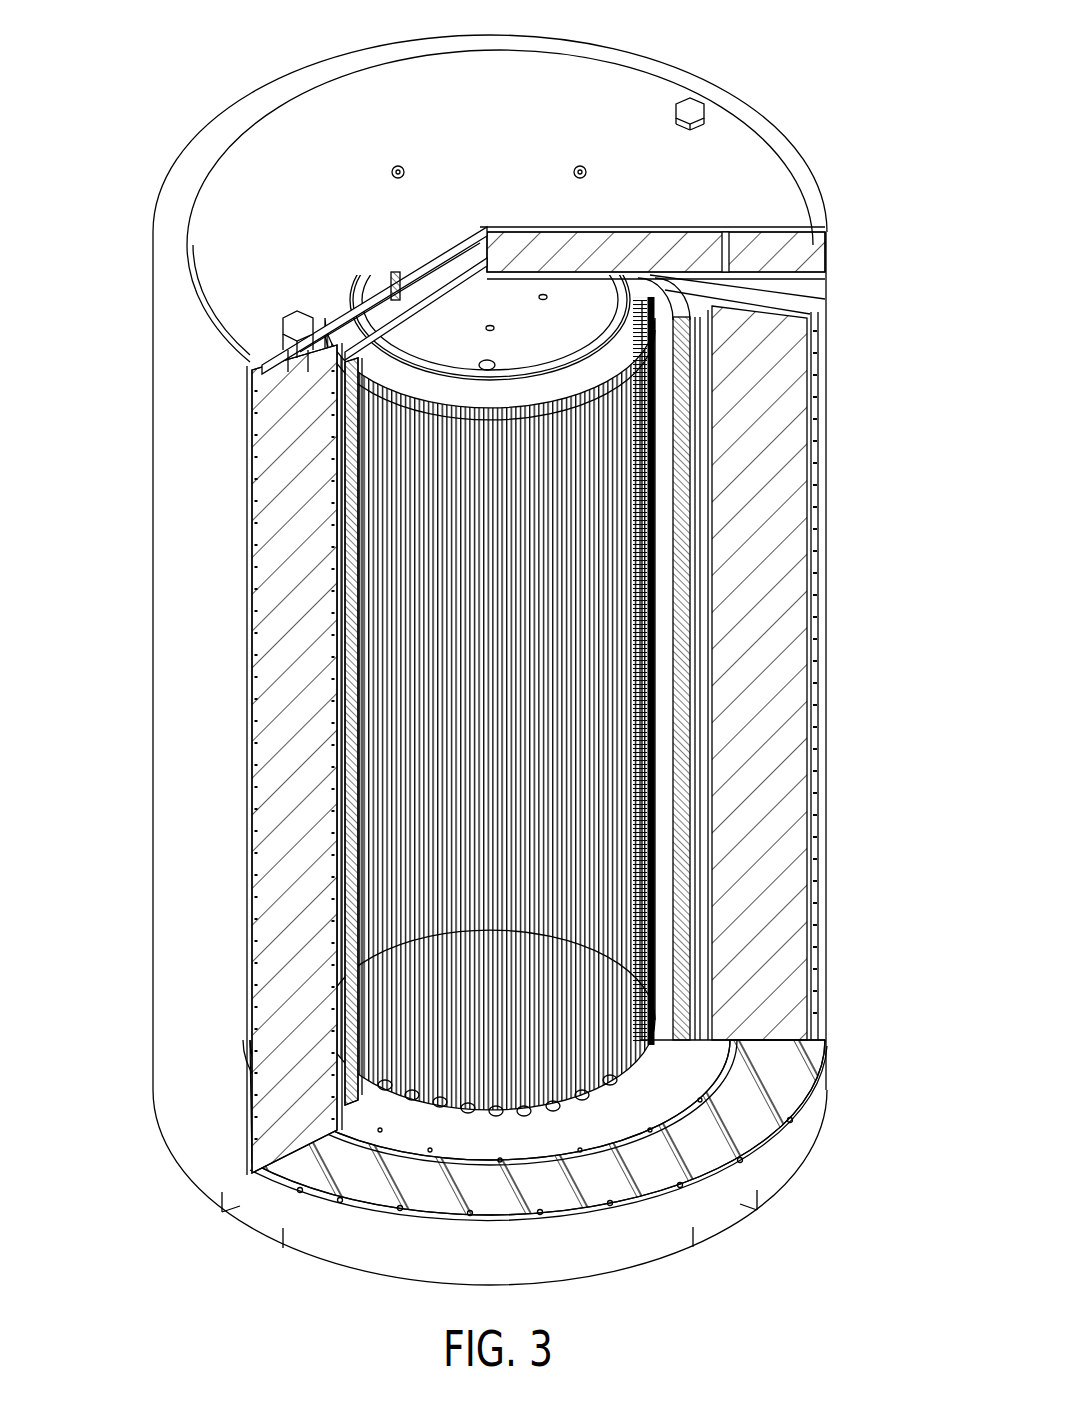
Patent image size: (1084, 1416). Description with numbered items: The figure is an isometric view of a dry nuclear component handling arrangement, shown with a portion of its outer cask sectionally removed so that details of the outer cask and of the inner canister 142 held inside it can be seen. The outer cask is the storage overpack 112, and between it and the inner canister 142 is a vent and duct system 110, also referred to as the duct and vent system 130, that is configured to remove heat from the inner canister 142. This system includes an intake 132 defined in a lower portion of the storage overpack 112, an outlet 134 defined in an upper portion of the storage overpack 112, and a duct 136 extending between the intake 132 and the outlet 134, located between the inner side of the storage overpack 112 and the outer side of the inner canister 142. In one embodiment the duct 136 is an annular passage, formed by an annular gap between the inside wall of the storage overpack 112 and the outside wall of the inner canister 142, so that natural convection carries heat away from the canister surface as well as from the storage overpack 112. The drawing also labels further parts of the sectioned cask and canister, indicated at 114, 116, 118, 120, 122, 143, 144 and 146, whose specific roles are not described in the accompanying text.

The vent and duct system 110 is at (807, 87).
The storage overpack 112 is at (148, 229).
The outer shell 114 is at (183, 486).
The shielding wall 116 is at (660, 573).
The outer body 118 is at (180, 775).
The inner liner 120 is at (676, 300).
The lid top plate 122 is at (563, 75).
The vent and duct system 130 is at (842, 301).
The intake 132 is at (255, 1222).
The outlet 134 is at (818, 290).
The duct 136 is at (644, 285).
The inner canister 142 is at (580, 318).
The inner liner plate 143 is at (663, 497).
The canister lid 144 is at (467, 320).
The bolt 146 is at (373, 357).